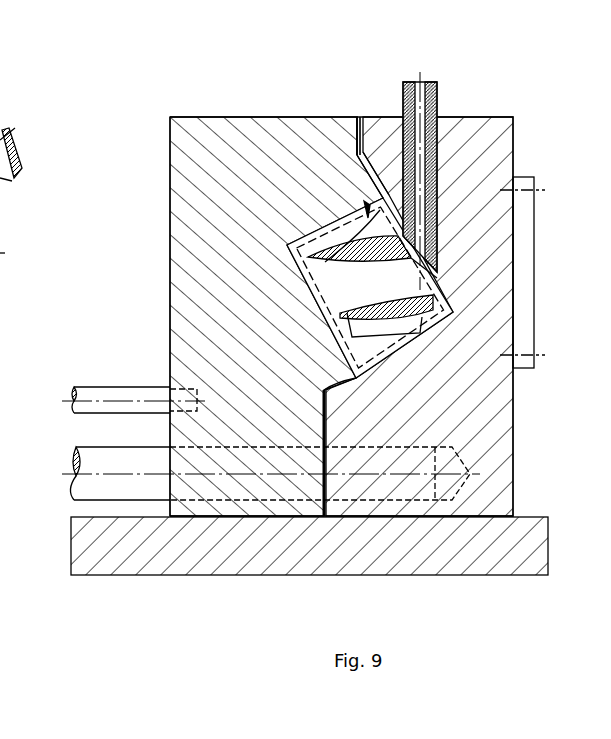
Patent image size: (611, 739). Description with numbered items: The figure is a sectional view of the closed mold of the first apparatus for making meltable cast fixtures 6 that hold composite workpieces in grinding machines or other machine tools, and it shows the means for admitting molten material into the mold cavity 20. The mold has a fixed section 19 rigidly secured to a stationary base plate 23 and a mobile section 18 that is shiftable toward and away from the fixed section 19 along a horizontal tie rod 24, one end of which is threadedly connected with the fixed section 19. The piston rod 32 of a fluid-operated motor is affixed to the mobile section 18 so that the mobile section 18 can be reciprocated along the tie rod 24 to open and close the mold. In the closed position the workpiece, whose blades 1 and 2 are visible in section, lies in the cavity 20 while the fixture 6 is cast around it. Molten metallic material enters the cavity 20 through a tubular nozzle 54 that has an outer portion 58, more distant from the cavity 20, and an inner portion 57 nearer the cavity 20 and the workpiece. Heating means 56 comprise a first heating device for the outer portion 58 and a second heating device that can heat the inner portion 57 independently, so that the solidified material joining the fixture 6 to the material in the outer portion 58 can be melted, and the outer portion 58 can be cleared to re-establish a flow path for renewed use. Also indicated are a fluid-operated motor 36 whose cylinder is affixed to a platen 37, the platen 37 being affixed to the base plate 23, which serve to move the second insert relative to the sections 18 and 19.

The blade 1 is at (440, 326).
The blade 2 is at (378, 212).
The meltable cast fixture 6 is at (366, 204).
The mobile mold section 18 is at (218, 128).
The fixed mold section 19 is at (470, 120).
The mold cavity 20 is at (380, 362).
The base plate 23 is at (128, 570).
The tie rod 24 is at (100, 456).
The piston rod 32 is at (93, 393).
The fluid-operated motor 36 is at (0, 186).
The platen 37 is at (0, 253).
The tubular nozzle 54 is at (398, 155).
The heating means 56 is at (430, 82).
The inner portion of the nozzle 57 is at (437, 238).
The outer portion of the nozzle 58 is at (437, 150).